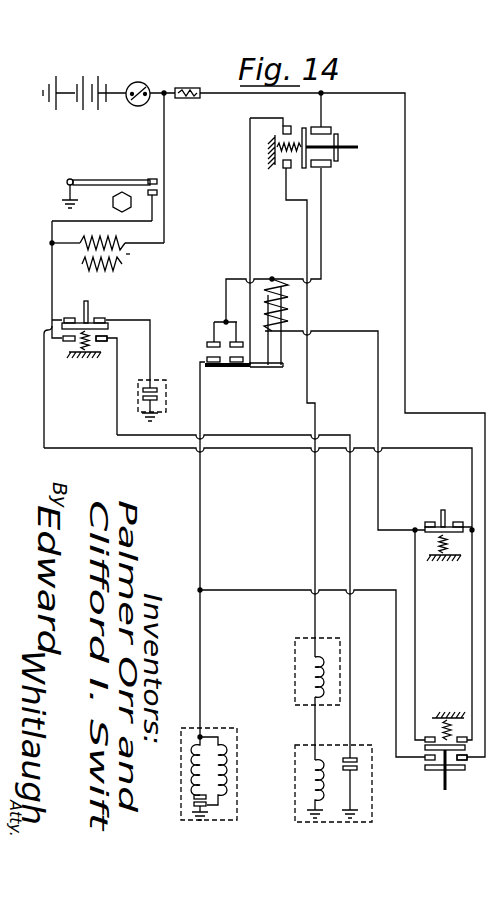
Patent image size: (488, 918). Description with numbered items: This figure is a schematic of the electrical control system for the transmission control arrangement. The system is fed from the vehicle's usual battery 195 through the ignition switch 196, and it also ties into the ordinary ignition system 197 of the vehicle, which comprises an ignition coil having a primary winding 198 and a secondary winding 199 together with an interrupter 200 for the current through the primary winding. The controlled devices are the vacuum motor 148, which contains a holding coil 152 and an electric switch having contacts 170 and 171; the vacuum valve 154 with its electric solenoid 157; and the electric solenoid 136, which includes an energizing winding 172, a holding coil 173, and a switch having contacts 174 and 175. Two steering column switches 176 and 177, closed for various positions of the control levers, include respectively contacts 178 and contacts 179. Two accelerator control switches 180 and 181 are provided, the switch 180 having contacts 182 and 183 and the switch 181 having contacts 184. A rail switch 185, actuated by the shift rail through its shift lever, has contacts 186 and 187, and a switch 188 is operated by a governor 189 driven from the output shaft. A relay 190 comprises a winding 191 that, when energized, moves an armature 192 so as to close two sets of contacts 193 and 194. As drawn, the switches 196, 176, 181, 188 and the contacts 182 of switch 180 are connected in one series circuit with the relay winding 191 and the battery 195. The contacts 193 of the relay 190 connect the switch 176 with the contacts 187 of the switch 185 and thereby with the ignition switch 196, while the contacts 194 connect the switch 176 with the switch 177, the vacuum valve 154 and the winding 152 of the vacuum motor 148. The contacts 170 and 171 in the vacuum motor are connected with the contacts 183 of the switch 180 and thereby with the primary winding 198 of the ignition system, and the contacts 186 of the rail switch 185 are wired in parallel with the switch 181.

The battery 195 is at (92, 74).
The ignition switch 196 is at (146, 86).
The interrupter 200 is at (62, 191).
The primary winding 198 is at (118, 240).
The ignition system 197 is at (130, 250).
The secondary winding 199 is at (133, 267).
The accelerator control switch 180 is at (94, 307).
The contacts 182 is at (108, 319).
The contacts 183 is at (102, 342).
The governor switch 188 is at (152, 389).
The governor 189 is at (166, 402).
The steering column switch 177 is at (280, 123).
The contacts 179 is at (282, 171).
The steering column switch 176 is at (332, 127).
The contacts 178 is at (330, 167).
The relay winding 191 is at (282, 297).
The relay contacts 193 is at (206, 345).
The relay contacts 194 is at (225, 364).
The armature 192 is at (279, 366).
The relay 190 is at (268, 386).
The accelerator control switch 181 is at (432, 521).
The contacts 184 is at (449, 519).
The contacts 186 is at (428, 737).
The rail switch 185 is at (453, 775).
The contacts 187 is at (466, 760).
The vacuum valve 154 is at (290, 653).
The electric solenoid 157 is at (310, 675).
The electric solenoid 136 is at (226, 728).
The holding coil 173 is at (232, 751).
The energizing winding 172 is at (200, 770).
The contacts 174 is at (208, 797).
The contacts 175 is at (210, 804).
The vacuum motor 148 is at (362, 745).
The holding coil 152 is at (314, 767).
The contacts 170 is at (358, 760).
The contacts 171 is at (354, 776).